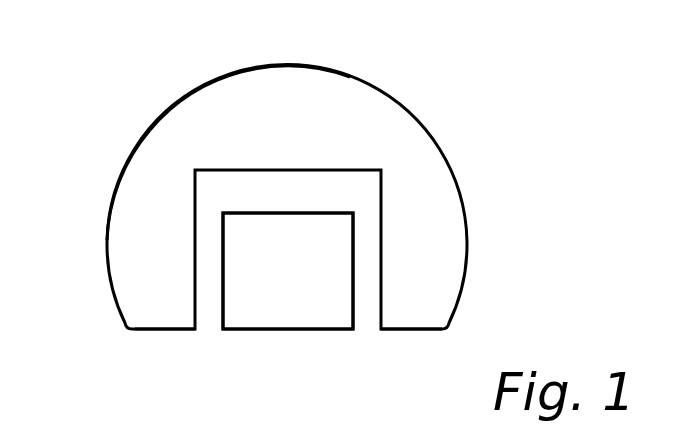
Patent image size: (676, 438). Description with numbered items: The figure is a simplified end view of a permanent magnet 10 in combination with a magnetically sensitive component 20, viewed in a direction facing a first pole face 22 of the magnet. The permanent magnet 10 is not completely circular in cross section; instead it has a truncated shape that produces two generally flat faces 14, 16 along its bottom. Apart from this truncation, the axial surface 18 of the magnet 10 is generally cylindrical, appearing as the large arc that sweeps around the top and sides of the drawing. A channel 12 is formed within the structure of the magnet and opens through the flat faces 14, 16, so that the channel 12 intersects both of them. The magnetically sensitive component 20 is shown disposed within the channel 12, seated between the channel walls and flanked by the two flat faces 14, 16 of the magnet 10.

The permanent magnet 10 is at (443, 177).
The channel 12 is at (367, 322).
The flat face 14 is at (162, 330).
The flat face 16 is at (418, 330).
The axial surface 18 is at (112, 200).
The magnetically sensitive component 20 is at (280, 330).
The first pole face 22 is at (212, 105).